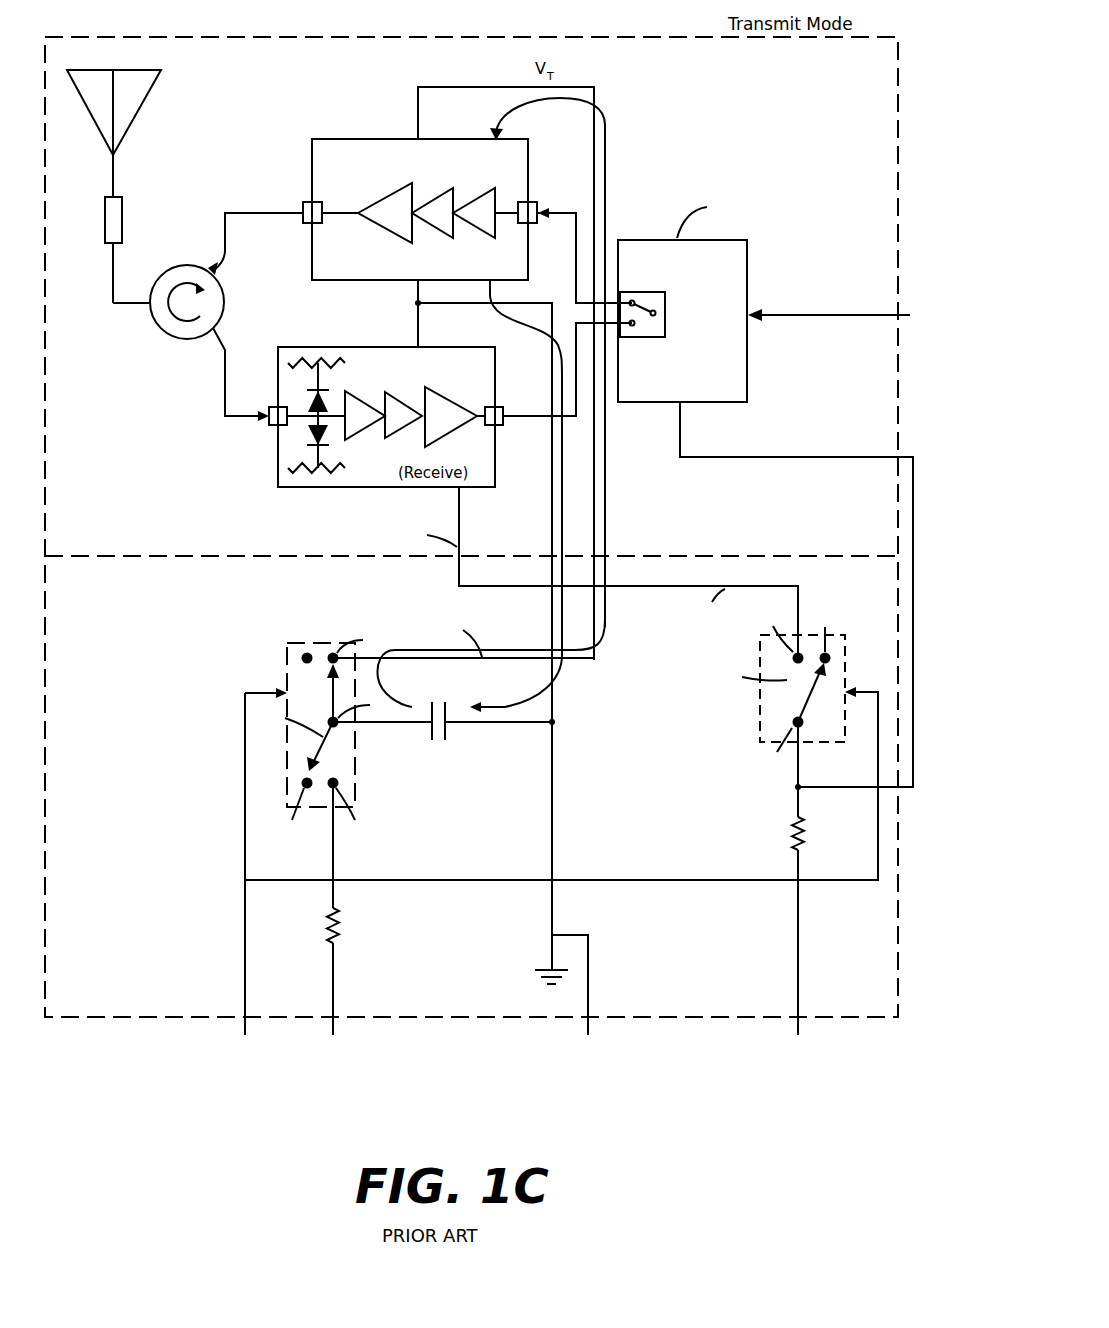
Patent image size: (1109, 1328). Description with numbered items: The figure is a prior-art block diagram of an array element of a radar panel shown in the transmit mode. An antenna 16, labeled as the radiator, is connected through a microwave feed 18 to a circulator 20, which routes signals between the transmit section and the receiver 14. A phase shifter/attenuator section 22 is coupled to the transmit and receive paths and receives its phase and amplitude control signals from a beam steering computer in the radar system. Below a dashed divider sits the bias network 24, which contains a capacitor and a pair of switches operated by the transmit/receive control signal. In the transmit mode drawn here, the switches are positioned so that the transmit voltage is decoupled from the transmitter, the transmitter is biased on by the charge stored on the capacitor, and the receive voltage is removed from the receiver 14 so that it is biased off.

The receiver 14 is at (517, 273).
The antenna 16 is at (140, 113).
The microwave feed 18 is at (122, 200).
The circulator 20 is at (213, 305).
The phase shifter/attenuator section 22 is at (720, 338).
The bias network 24 is at (140, 628).